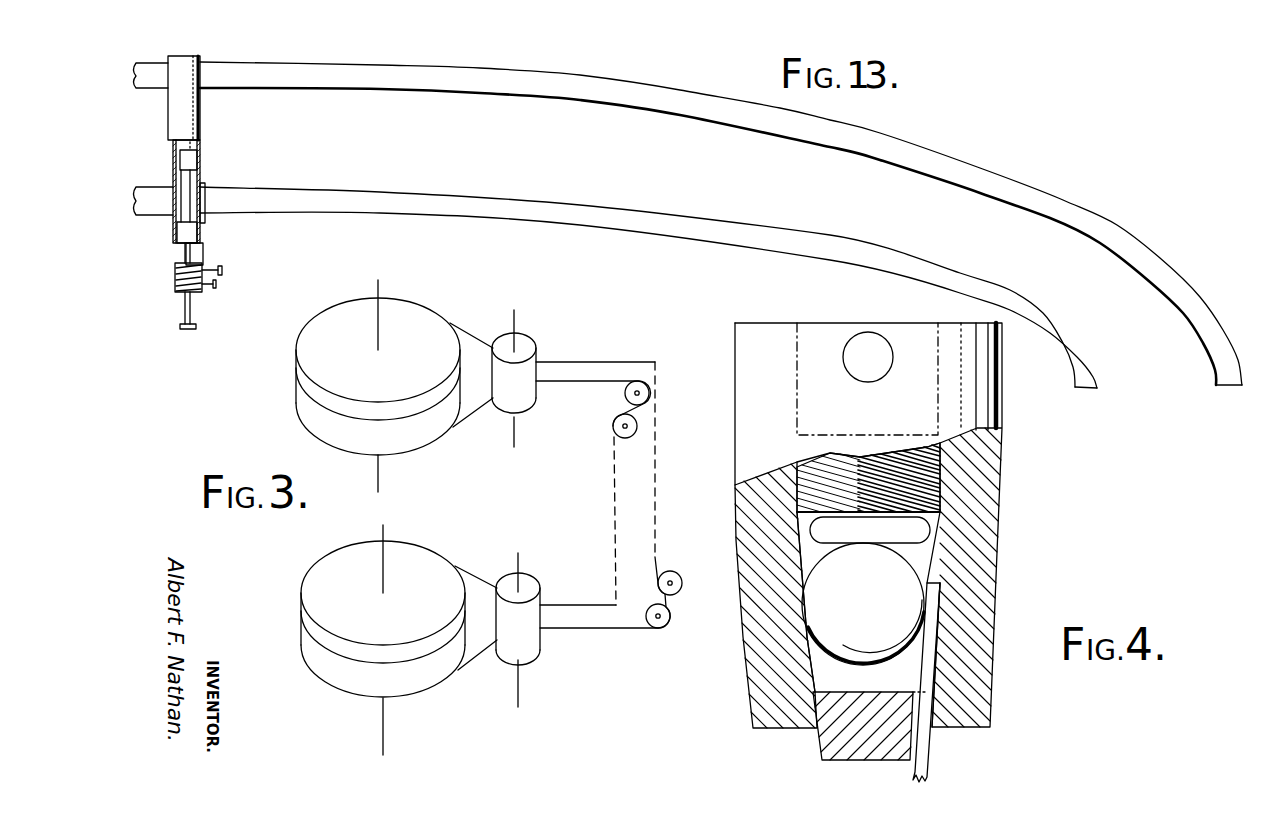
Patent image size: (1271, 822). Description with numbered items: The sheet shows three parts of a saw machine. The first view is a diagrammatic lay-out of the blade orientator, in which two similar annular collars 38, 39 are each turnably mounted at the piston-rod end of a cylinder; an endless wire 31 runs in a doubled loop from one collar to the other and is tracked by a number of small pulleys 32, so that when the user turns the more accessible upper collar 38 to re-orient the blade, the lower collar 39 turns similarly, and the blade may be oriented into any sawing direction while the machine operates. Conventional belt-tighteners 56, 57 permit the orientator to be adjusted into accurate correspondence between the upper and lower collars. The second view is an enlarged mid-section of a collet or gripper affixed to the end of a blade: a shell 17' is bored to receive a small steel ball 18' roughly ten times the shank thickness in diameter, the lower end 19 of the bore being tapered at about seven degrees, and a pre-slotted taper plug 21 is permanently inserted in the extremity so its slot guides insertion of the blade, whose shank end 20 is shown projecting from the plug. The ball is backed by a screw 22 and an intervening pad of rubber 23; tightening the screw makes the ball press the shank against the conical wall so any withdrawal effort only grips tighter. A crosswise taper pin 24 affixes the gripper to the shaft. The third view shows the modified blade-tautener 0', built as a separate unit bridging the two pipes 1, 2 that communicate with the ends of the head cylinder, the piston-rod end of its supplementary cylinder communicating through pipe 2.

In FIG. 13, the blade-tautener 0' is at (180, 192).
In FIG. 13, the pipe 1 is at (288, 81).
In FIG. 13, the pipe 2 is at (308, 193).
In FIG. 3, the annular collar 38 is at (378, 386).
In FIG. 3, the annular collar 39 is at (383, 640).
In FIG. 3, the pulley 32 is at (516, 508).
In FIG. 3, the endless wire 31 is at (582, 361).
In FIG. 3, the belt-tightener 56 is at (616, 411).
In FIG. 3, the belt-tightener 57 is at (673, 599).
In FIG. 4, the shell 17' is at (896, 525).
In FIG. 4, the taper pin 24 is at (868, 357).
In FIG. 4, the screw 22 is at (808, 473).
In FIG. 4, the pad of rubber 23 is at (870, 530).
In FIG. 4, the steel ball 18' is at (863, 604).
In FIG. 4, the lower end of bore 19 is at (812, 684).
In FIG. 4, the tape 20 is at (933, 732).
In FIG. 4, the taper plug 21 is at (822, 754).